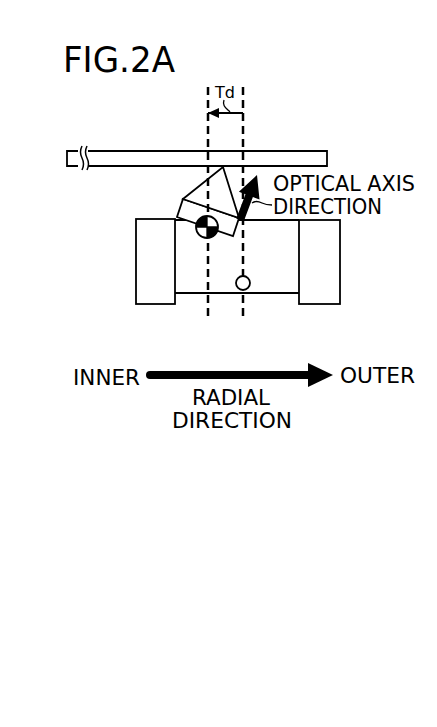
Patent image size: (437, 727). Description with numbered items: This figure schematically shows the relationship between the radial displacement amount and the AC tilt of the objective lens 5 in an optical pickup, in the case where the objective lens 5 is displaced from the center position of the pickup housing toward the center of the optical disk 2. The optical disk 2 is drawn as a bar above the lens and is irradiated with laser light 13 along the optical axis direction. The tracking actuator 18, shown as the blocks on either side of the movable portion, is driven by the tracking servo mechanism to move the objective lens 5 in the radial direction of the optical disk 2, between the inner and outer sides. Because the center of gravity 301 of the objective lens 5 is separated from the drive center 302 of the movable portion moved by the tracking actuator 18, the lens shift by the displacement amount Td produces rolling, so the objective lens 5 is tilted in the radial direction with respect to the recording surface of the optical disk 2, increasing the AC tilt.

The optical disk 2 is at (328, 158).
The objective lens 5 is at (183, 200).
The laser light 13 is at (199, 193).
The tracking actuator 18 is at (136, 268).
The center of gravity 301 is at (205, 238).
The drive center 302 is at (240, 290).